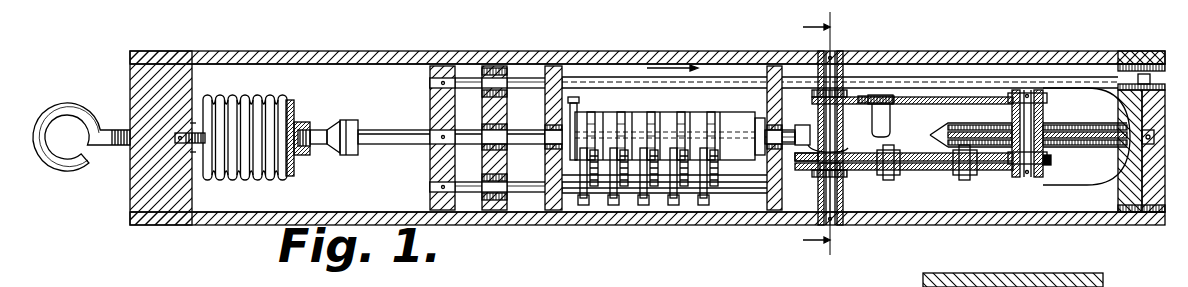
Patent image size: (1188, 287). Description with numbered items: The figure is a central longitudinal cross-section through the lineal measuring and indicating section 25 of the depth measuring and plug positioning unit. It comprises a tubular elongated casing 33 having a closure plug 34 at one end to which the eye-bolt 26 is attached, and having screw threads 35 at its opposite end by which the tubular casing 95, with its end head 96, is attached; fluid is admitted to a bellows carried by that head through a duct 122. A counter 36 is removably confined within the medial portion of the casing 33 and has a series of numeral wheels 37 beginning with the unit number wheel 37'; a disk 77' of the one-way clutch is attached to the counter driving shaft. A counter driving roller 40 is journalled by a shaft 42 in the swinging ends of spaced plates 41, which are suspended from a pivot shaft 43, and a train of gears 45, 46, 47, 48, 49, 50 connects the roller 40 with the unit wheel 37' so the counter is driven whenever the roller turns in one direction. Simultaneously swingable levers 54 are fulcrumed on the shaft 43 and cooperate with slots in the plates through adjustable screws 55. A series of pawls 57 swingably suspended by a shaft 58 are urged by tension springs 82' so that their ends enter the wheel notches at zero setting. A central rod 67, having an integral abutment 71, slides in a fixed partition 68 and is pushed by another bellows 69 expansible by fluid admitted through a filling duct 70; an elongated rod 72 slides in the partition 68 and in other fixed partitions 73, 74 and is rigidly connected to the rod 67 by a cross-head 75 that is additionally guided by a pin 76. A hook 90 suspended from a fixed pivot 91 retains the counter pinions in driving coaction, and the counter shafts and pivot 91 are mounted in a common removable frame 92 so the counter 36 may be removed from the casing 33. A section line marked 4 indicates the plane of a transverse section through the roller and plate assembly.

The lineal measuring and indicating section 25 is at (130, 53).
The tubular elongated casing 33 is at (385, 51).
The closure plug 34 is at (145, 197).
The eye-bolt 26 is at (68, 164).
The filling duct 70 is at (178, 139).
The bellows 69 is at (238, 182).
The abutment 71 is at (360, 150).
The central rod 67 is at (411, 112).
The cross-head 75 is at (440, 170).
The fixed partition 68 is at (495, 162).
The pin 76 is at (470, 192).
The removable frame 92 is at (552, 212).
The fixed pivot 91 is at (568, 102).
The hook 90 is at (570, 118).
The elongated member or rod 72 is at (604, 78).
The counter 36 is at (650, 100).
The numeral wheels 37 is at (656, 123).
The unit number wheel 37' is at (716, 123).
The disk 77' is at (763, 147).
The tension springs 82' is at (648, 198).
The pawls 57 is at (634, 196).
The shaft 58 is at (722, 184).
The fixed partition 74 is at (776, 66).
The section line 4 is at (826, 133).
The pivot shaft 43 is at (832, 54).
The levers 54 is at (898, 100).
The plates 41 is at (926, 105).
The adjustable screws 55 is at (886, 98).
The gear 50 is at (805, 125).
The gear 49 is at (848, 150).
The gear 48 is at (806, 165).
The gear 47 is at (908, 176).
The gear 46 is at (990, 176).
The counter driving roller 40 is at (1098, 106).
The shaft 42 is at (1030, 178).
The gear 45 is at (1051, 160).
The duct 122 is at (1142, 140).
The fixed partition 73 is at (1128, 192).
The tubular casing 95 is at (1156, 215).
The end head 96 is at (1140, 207).
The screw threads 35 is at (1132, 54).